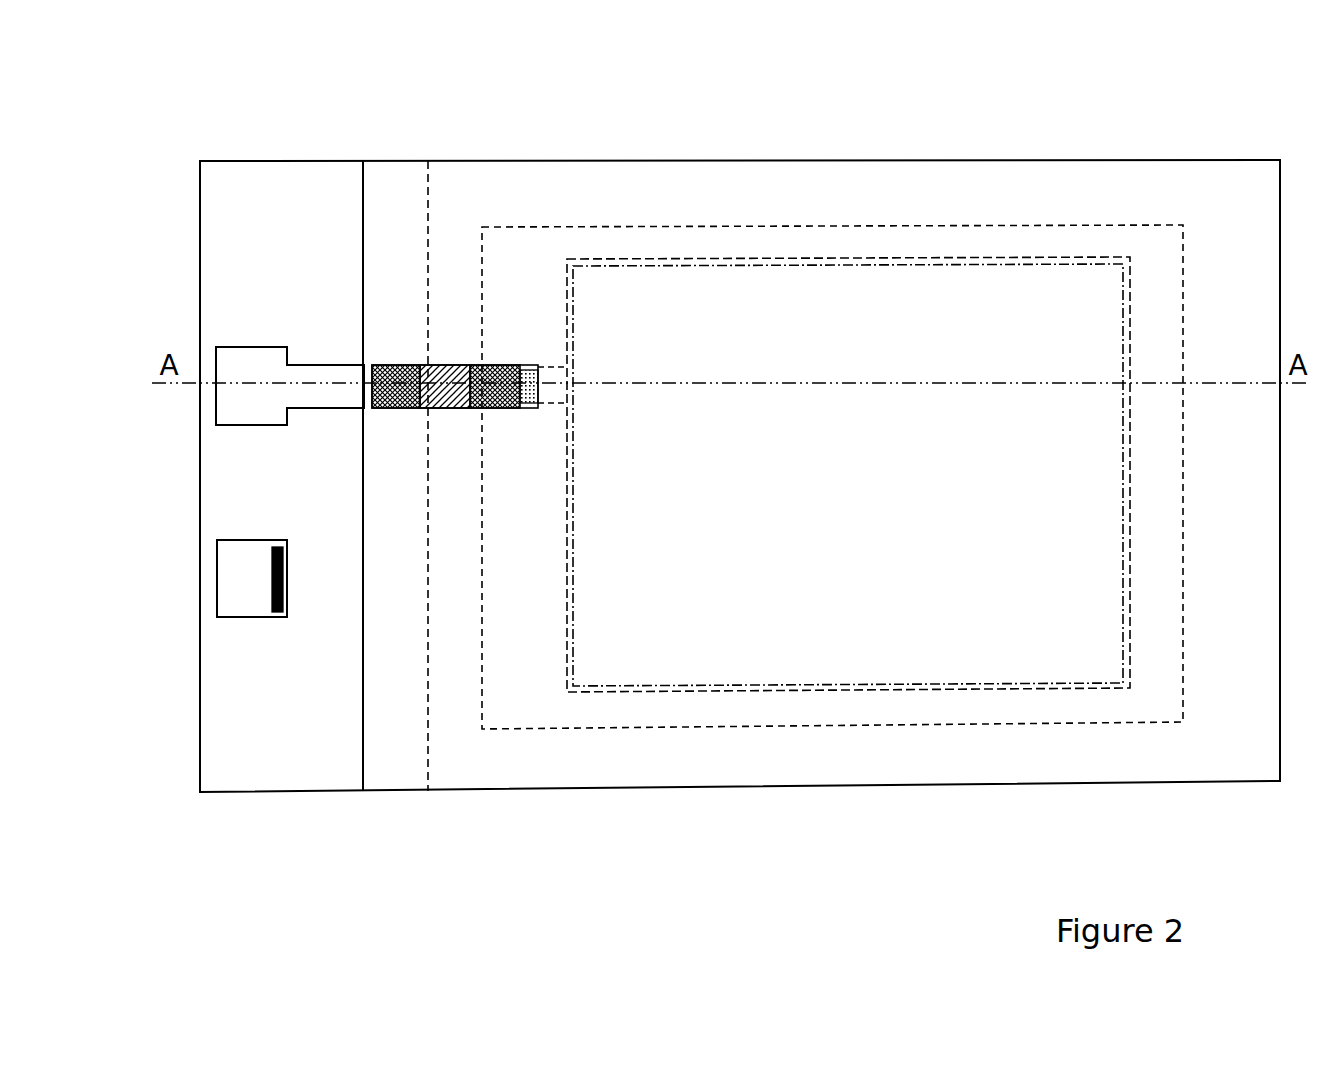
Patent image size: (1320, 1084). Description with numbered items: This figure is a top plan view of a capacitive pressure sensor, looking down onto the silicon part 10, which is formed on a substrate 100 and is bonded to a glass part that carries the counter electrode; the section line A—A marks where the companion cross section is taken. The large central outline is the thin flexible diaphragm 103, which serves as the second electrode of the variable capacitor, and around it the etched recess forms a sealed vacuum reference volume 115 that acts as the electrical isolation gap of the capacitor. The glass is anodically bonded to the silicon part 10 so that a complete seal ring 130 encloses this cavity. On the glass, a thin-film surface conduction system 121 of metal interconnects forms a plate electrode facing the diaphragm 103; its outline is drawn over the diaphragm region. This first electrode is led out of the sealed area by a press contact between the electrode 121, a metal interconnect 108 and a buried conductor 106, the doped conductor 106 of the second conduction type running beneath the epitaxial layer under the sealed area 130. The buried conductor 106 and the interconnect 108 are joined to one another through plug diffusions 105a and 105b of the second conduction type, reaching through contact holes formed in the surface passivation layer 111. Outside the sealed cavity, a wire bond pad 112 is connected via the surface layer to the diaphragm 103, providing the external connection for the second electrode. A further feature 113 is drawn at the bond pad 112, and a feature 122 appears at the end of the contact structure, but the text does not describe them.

The silicon part 10 is at (238, 746).
The substrate 100 is at (290, 722).
The flexible diaphragm 103 is at (883, 263).
The plug diffusion 105a is at (508, 363).
The plug diffusion 105b is at (380, 363).
The buried conductor 106 is at (460, 408).
The metal interconnect 108 is at (510, 408).
The surface passivation layer 111 is at (240, 365).
The wire bond pad 112 is at (257, 590).
The contact 113 is at (275, 547).
The sealed vacuum reference volume 115 is at (993, 240).
The thin-film surface conduction system 121 is at (682, 258).
The contact hole 122 is at (533, 388).
The seal ring 130 is at (462, 722).